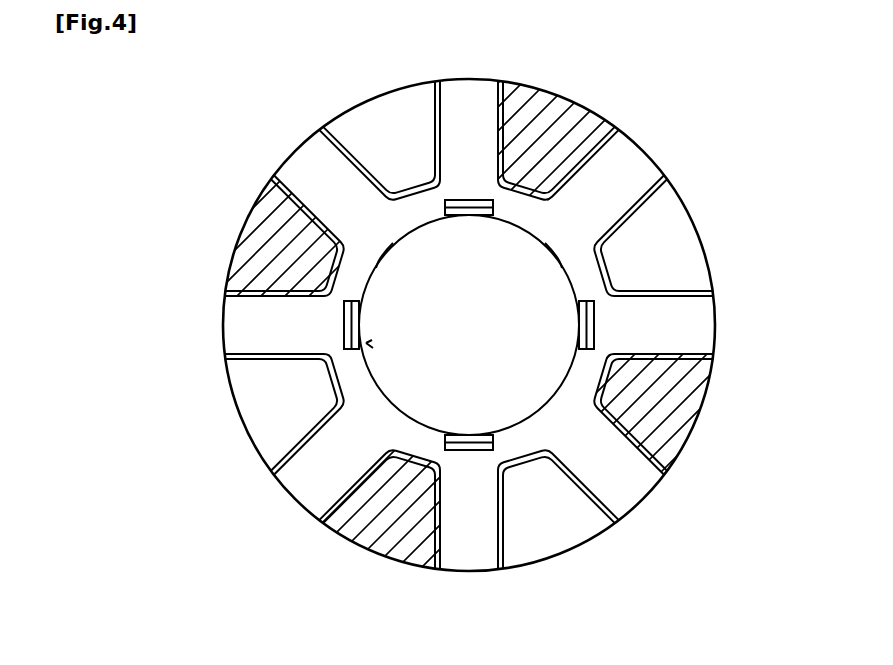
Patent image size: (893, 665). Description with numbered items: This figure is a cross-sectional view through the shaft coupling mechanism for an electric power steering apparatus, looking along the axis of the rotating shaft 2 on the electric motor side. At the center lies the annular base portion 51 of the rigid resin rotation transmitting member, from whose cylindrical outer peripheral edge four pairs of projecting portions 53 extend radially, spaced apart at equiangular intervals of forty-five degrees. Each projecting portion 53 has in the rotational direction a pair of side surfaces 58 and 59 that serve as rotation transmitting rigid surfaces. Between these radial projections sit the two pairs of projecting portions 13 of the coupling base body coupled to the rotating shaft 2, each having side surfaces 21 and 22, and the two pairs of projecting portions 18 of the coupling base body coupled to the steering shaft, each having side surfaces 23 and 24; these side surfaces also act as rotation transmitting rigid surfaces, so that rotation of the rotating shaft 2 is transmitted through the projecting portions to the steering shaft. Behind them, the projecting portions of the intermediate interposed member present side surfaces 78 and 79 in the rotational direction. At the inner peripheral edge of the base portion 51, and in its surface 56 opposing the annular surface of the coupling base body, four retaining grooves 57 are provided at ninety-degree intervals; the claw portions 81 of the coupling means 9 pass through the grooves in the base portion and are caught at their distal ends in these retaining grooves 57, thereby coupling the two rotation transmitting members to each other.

The rotating shaft 2 is at (461, 343).
The coupling means 9 is at (366, 343).
The projecting portions 13 is at (377, 125).
The projecting portions 18 is at (568, 118).
The side surface 21 is at (437, 137).
The side surface 22 is at (323, 140).
The side surface 23 is at (292, 188).
The side surface 24 is at (496, 137).
The annular base portion 51 is at (565, 240).
The projecting portions 53 is at (470, 113).
The surface 56 is at (372, 240).
The retaining grooves 57 is at (456, 208).
The side surface 58 is at (433, 123).
The side surface 59 is at (510, 122).
The side surface 78 is at (430, 147).
The side surface 79 is at (550, 135).
The claw portions 81 is at (478, 208).